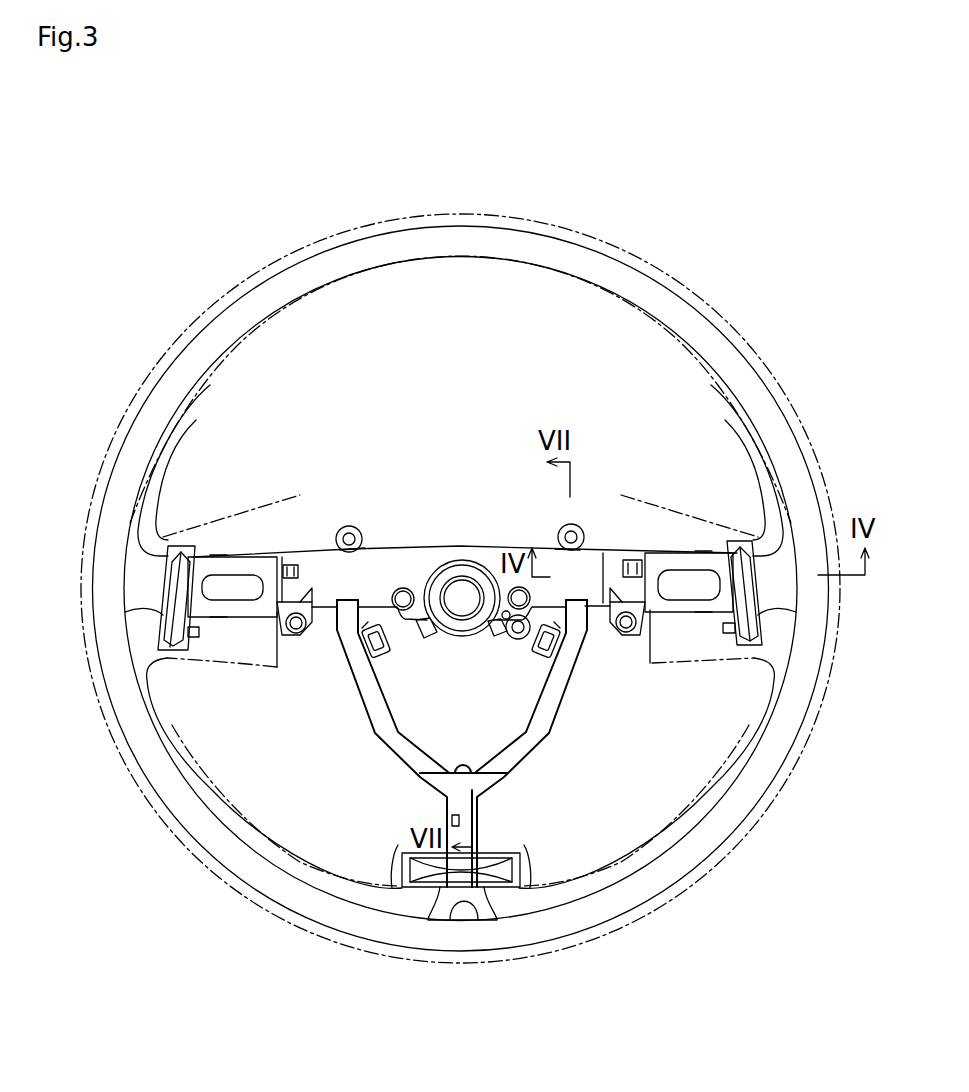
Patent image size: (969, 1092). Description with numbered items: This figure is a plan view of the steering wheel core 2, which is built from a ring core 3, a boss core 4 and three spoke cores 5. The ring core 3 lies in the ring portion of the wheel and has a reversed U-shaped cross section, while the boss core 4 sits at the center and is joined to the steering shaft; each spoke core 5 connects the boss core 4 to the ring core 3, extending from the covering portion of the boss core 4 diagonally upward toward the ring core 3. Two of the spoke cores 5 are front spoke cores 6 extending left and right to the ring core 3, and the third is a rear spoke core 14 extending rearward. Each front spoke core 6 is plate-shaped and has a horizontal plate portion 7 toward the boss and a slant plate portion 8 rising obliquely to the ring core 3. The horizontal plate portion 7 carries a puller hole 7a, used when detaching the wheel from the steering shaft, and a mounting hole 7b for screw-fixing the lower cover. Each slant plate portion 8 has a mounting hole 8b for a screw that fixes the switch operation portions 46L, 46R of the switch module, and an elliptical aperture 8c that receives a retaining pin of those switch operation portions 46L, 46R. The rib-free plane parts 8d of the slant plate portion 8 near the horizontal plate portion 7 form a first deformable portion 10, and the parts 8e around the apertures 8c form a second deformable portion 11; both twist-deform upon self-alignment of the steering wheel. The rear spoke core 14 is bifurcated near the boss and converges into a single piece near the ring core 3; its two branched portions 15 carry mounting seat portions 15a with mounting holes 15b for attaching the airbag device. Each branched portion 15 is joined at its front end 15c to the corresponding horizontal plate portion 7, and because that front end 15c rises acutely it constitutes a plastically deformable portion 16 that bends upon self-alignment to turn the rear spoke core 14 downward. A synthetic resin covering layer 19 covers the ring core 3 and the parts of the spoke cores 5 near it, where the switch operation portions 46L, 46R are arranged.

The steering wheel core 2 is at (523, 172).
The ring core 3 is at (380, 245).
The boss core 4 is at (463, 543).
The spoke cores 5 is at (460, 524).
The front spoke cores 6 is at (247, 547).
The horizontal plate portion 7 is at (350, 583).
The puller hole 7a is at (413, 592).
The mounting hole 7b is at (363, 560).
The slant plate portion 8 is at (216, 547).
The mounting hole 8b is at (296, 637).
The elliptical aperture 8c is at (228, 611).
The parts of the slant plate portions 8d is at (606, 550).
The parts of the slant plate portions 8e is at (232, 610).
The first deformable portion 10 is at (482, 502).
The second deformable portion 11 is at (396, 677).
The rear spoke core 14 is at (405, 772).
The branched portions 15 is at (375, 718).
The mounting seat portion 15a is at (397, 657).
The mounting hole 15b is at (388, 640).
The front end 15c is at (560, 565).
The plastically deformable portion 16 is at (460, 483).
The covering layer 19 is at (655, 258).
The switch operation portion 46L is at (217, 667).
The switch operation portion 46R is at (697, 662).